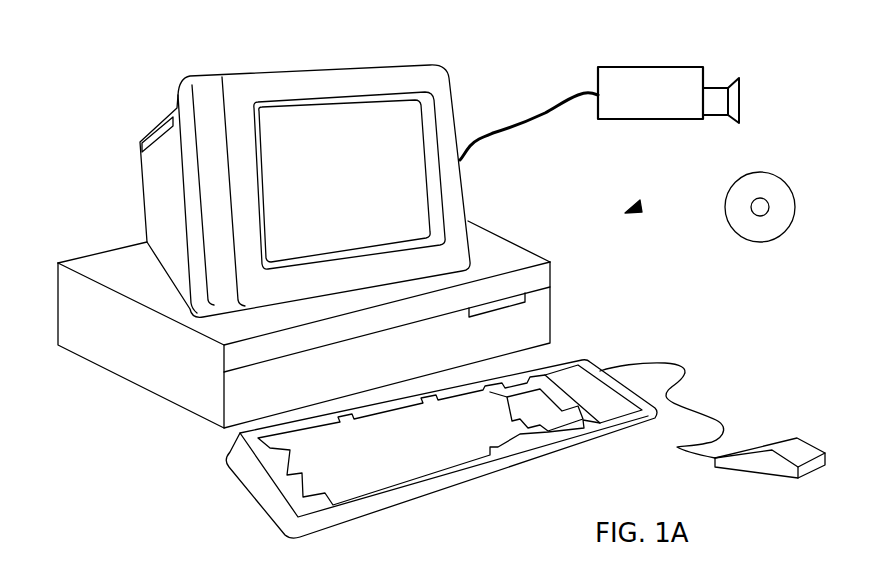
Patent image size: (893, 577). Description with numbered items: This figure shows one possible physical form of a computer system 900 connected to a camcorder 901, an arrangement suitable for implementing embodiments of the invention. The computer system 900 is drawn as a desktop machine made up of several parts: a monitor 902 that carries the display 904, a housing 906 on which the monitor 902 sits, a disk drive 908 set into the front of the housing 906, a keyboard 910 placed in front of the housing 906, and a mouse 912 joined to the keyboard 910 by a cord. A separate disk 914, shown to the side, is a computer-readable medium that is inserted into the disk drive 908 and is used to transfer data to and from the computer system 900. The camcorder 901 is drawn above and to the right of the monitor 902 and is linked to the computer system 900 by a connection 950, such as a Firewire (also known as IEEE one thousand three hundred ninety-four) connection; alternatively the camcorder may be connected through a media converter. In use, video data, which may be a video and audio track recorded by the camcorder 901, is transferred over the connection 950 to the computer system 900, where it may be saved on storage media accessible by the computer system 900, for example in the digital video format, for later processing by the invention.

The computer system 900 is at (640, 206).
The camcorder 901 is at (628, 67).
The monitor 902 is at (462, 188).
The display 904 is at (417, 137).
The housing 906 is at (180, 408).
The disk drive 908 is at (527, 293).
The keyboard 910 is at (447, 491).
The mouse 912 is at (813, 448).
The disk 914 is at (775, 173).
The connection 950 is at (540, 112).